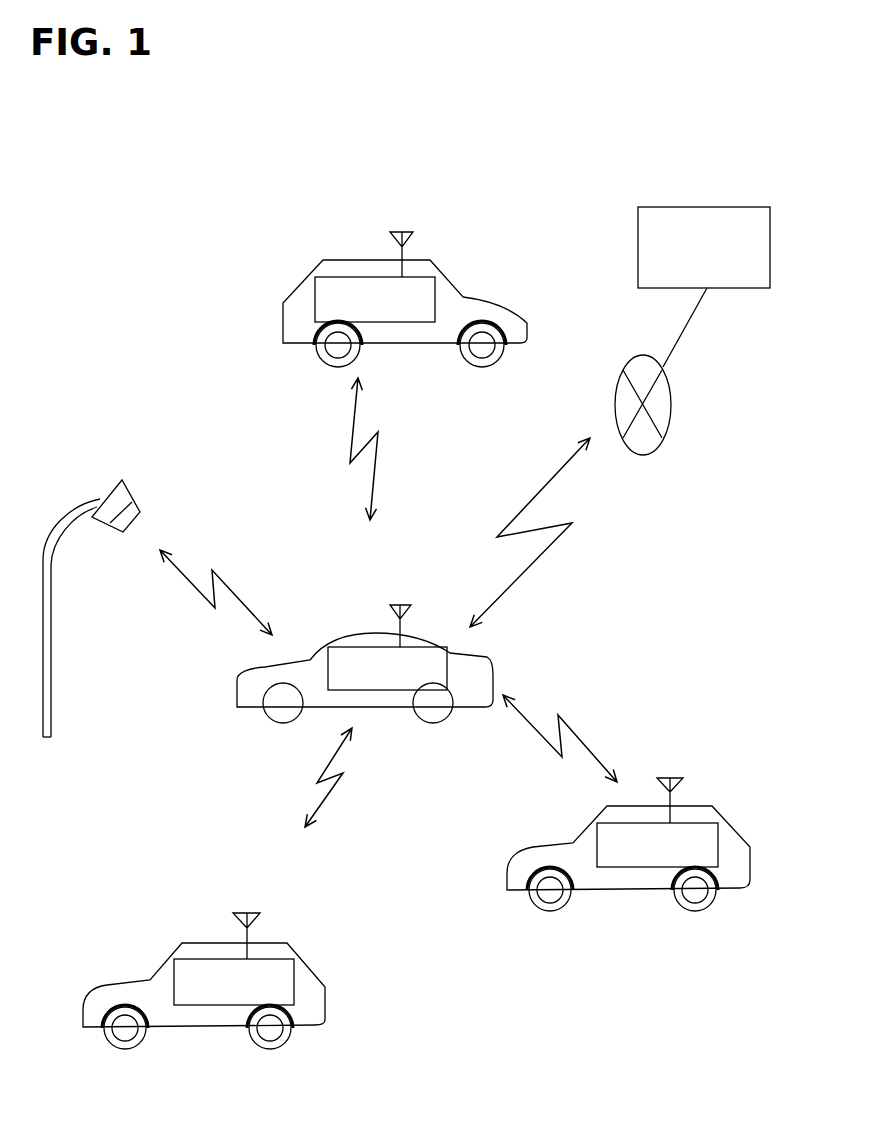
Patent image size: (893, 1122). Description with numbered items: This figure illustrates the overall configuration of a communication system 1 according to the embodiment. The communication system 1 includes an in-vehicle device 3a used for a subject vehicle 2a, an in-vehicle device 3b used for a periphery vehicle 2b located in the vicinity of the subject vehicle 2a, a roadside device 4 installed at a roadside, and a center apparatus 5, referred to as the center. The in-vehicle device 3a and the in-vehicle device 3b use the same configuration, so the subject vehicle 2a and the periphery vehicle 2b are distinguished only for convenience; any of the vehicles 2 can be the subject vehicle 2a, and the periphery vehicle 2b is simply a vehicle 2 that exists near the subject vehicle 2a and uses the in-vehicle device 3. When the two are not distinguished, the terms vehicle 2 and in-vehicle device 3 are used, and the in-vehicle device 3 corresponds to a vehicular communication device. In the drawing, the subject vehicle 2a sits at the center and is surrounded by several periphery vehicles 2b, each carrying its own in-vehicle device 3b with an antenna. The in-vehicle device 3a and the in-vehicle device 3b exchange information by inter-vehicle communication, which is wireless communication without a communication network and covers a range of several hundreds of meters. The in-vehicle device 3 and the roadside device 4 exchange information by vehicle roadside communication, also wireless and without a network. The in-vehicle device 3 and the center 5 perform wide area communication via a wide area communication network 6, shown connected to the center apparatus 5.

The communication system 1 is at (695, 122).
The vehicle 2 is at (416, 620).
The subject vehicle 2a is at (420, 630).
The periphery vehicle 2b is at (418, 260).
The in-vehicle device 3 is at (454, 563).
The in-vehicle device 3a is at (366, 647).
The in-vehicle device 3b is at (366, 277).
The roadside device 4 is at (107, 497).
The center apparatus 5 is at (725, 207).
The wide area communication network 6 is at (672, 397).